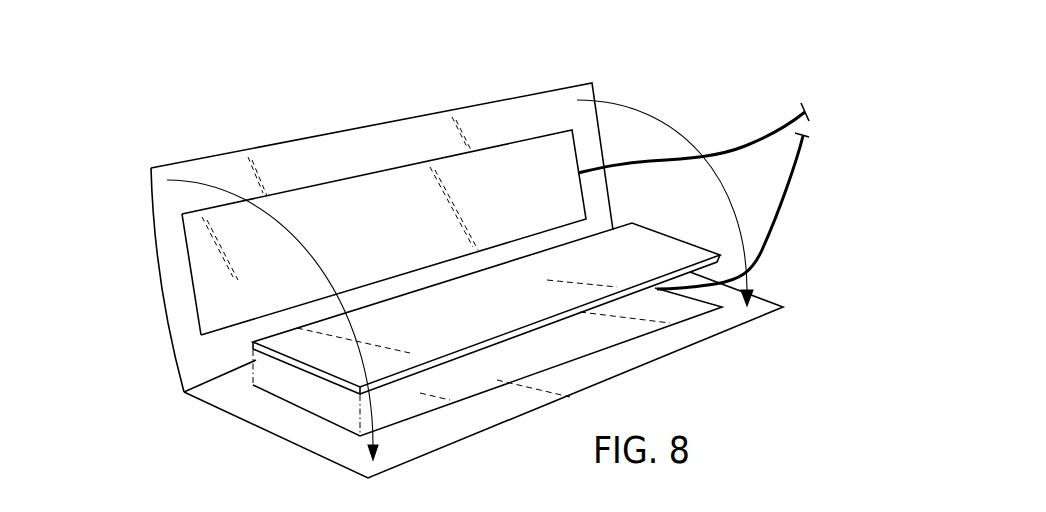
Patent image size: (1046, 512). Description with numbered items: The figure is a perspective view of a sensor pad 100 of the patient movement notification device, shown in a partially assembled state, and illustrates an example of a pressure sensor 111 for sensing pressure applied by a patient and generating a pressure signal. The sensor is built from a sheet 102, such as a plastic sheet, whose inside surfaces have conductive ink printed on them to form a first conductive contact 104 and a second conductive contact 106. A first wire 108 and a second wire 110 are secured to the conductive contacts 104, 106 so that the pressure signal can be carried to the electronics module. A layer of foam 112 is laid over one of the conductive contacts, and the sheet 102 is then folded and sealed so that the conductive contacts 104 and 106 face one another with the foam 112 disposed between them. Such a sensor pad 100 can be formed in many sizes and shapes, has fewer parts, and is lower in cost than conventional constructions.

The sensor pad 100 is at (511, 91).
The sheet 102 is at (183, 353).
The conductive contact 104 is at (346, 193).
The conductive contact 106 is at (558, 351).
The wire 108 is at (777, 127).
The wire 110 is at (793, 173).
The pressure sensor 111 is at (168, 265).
The foam 112 is at (477, 323).